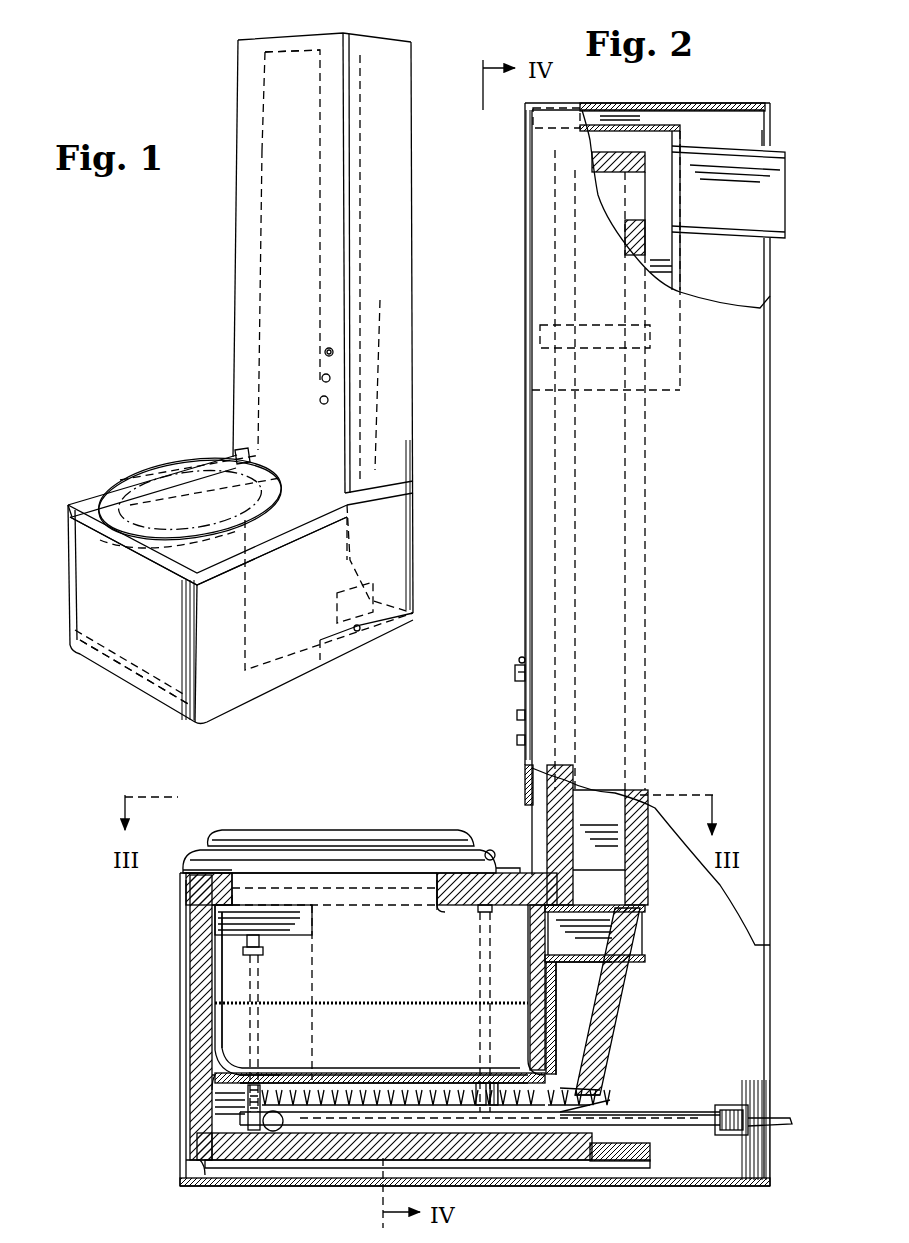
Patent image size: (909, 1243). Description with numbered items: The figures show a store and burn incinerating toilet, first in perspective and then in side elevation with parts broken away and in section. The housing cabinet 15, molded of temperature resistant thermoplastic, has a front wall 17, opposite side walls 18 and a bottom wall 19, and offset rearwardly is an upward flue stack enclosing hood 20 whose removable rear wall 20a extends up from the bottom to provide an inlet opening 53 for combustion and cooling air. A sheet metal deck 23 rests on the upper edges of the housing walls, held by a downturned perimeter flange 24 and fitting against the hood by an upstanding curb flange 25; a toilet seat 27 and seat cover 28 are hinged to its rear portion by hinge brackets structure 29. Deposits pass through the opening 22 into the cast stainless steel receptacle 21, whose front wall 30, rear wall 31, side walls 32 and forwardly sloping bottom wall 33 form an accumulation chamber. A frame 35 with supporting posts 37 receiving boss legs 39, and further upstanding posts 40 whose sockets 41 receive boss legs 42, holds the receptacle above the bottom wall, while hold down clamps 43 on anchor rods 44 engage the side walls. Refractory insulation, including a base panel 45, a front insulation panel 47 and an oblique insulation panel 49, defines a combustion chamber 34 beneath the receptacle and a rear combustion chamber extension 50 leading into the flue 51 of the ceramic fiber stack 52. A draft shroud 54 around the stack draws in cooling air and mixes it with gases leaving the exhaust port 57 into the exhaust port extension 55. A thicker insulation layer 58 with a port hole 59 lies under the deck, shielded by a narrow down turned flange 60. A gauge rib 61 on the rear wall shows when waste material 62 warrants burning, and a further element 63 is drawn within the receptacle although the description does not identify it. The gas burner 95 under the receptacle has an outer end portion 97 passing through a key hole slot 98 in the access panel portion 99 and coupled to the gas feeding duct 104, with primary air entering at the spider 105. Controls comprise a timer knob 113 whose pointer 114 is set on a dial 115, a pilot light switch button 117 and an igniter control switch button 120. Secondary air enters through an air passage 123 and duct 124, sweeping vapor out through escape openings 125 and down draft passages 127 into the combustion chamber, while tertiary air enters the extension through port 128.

In FIG. 1, the housing cabinet 15 is at (68, 576).
In FIG. 2, the housing cabinet 15 is at (182, 972).
In FIG. 1, the front wall 17 is at (120, 652).
In FIG. 2, the front wall 17 is at (180, 1032).
In FIG. 1, the side walls 18 is at (288, 650).
In FIG. 2, the bottom wall 19 is at (310, 1186).
In FIG. 1, the hood 20 is at (237, 270).
In FIG. 2, the hood 20 is at (526, 612).
In FIG. 2, the rear wall of hood 20a is at (770, 650).
In FIG. 2, the receptacle 21 is at (556, 985).
In FIG. 2, the opening 22 is at (420, 873).
In FIG. 1, the deck 23 is at (68, 505).
In FIG. 2, the deck 23 is at (195, 860).
In FIG. 1, the perimeter flange 24 is at (207, 564).
In FIG. 2, the perimeter flange 24 is at (180, 878).
In FIG. 1, the curb flange 25 is at (244, 460).
In FIG. 2, the curb flange 25 is at (505, 865).
In FIG. 1, the toilet seat 27 is at (107, 498).
In FIG. 2, the toilet seat 27 is at (290, 850).
In FIG. 1, the seat cover 28 is at (145, 472).
In FIG. 2, the seat cover 28 is at (340, 830).
In FIG. 2, the hinge brackets structure 29 is at (490, 848).
In FIG. 2, the front wall of receptacle 30 is at (222, 1001).
In FIG. 2, the rear wall of receptacle 31 is at (556, 995).
In FIG. 2, the side walls of receptacle 32 is at (388, 975).
In FIG. 2, the bottom wall of receptacle 33 is at (397, 1077).
In FIG. 2, the combustion chamber 34 is at (350, 1083).
In FIG. 1, the frame 35 is at (338, 640).
In FIG. 2, the frame 35 is at (650, 1157).
In FIG. 2, the supporting posts 37 is at (240, 1118).
In FIG. 2, the boss legs 39 is at (241, 1083).
In FIG. 2, the upstanding posts 40 is at (505, 1095).
In FIG. 2, the sockets 41 is at (475, 1088).
In FIG. 2, the boss legs 42 is at (497, 1083).
In FIG. 2, the hold down clamps 43 is at (258, 930).
In FIG. 2, the anchor rods 44 is at (262, 995).
In FIG. 2, the base panel 45 is at (357, 1130).
In FIG. 2, the front insulation panel 47 is at (205, 1077).
In FIG. 2, the oblique insulation panel 49 is at (612, 1022).
In FIG. 2, the combustion chamber extension 50 is at (610, 992).
In FIG. 2, the flue 51 is at (594, 785).
In FIG. 1, the stack 52 is at (265, 213).
In FIG. 2, the stack 52 is at (648, 846).
In FIG. 2, the inlet opening 53 is at (772, 286).
In FIG. 2, the draft shroud 54 is at (680, 285).
In FIG. 2, the exhaust port extension 55 is at (770, 146).
In FIG. 2, the exhaust port 57 is at (641, 202).
In FIG. 2, the refractory insulation layer 58 is at (205, 905).
In FIG. 2, the port hole 59 is at (445, 905).
In FIG. 2, the down turned flange 60 is at (435, 905).
In FIG. 2, the gauge rib 61 is at (530, 1003).
In FIG. 2, the waste material 62 is at (282, 1000).
In FIG. 2, the peat layer 63 is at (448, 1002).
In FIG. 2, the gas burner 95 is at (420, 1108).
In FIG. 2, the outer end portion of burner 97 is at (670, 1112).
In FIG. 2, the key hole slot 98 is at (610, 1103).
In FIG. 2, the access panel portion 99 is at (596, 1098).
In FIG. 2, the gas feeding duct 104 is at (754, 1118).
In FIG. 2, the spider 105 is at (725, 1105).
In FIG. 1, the knob 113 is at (334, 352).
In FIG. 2, the knob 113 is at (513, 679).
In FIG. 2, the pointer 114 is at (519, 658).
In FIG. 2, the dial 115 is at (518, 650).
In FIG. 1, the pilot light switch button 117 is at (331, 378).
In FIG. 2, the pilot light switch button 117 is at (516, 712).
In FIG. 1, the control switch button 120 is at (328, 400).
In FIG. 2, the control switch button 120 is at (516, 745).
In FIG. 2, the air passage 123 is at (608, 940).
In FIG. 2, the duct 124 is at (627, 904).
In FIG. 2, the escape openings 125 is at (304, 930).
In FIG. 2, the down draft passages 127 is at (212, 1100).
In FIG. 2, the tertiary air inlet port 128 is at (603, 1060).